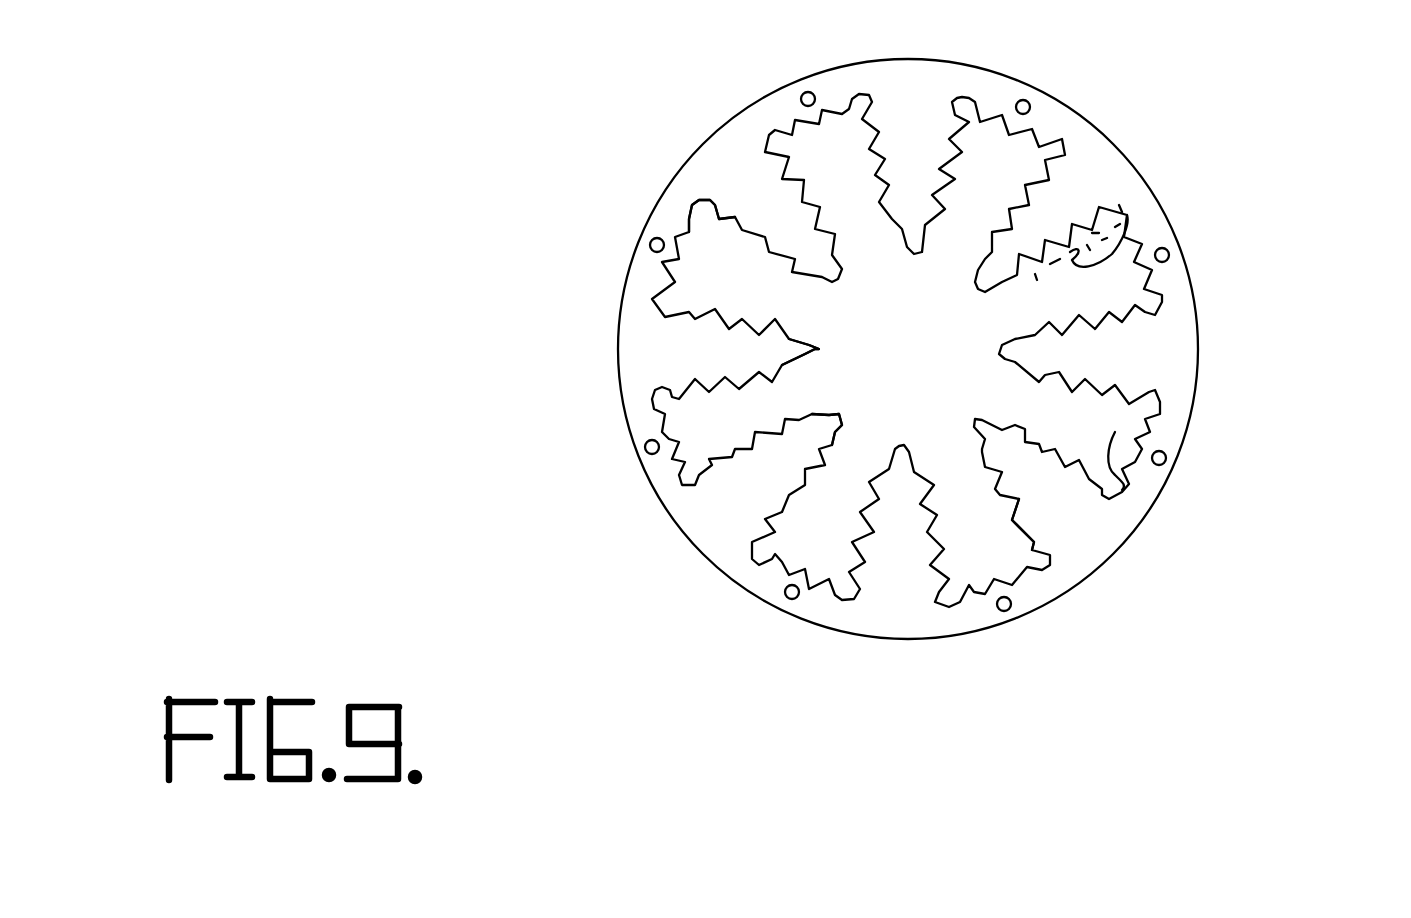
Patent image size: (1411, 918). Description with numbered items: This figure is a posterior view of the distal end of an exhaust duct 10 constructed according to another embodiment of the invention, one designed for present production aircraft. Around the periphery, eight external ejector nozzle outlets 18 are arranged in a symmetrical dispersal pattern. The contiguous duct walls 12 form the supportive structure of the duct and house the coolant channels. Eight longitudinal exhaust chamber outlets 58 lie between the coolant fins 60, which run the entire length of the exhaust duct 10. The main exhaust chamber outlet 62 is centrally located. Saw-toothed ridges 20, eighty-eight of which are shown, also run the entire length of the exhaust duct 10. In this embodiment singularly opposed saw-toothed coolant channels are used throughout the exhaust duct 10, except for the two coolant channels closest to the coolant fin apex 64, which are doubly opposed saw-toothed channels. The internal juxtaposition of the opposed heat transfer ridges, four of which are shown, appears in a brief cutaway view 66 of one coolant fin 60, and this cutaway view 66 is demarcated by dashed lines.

The exhaust duct 10 is at (1210, 350).
The contiguous duct walls 12 is at (1048, 112).
The external ejector nozzle outlets 18 is at (1170, 255).
The saw-toothed ridges 20 is at (683, 217).
The longitudinal exhaust chamber outlets 58 is at (1100, 495).
The coolant fins 60 is at (1037, 483).
The main exhaust chamber outlet 62 is at (907, 347).
The coolant fin apex 64 is at (837, 412).
The brief cutaway view 66 is at (1130, 210).